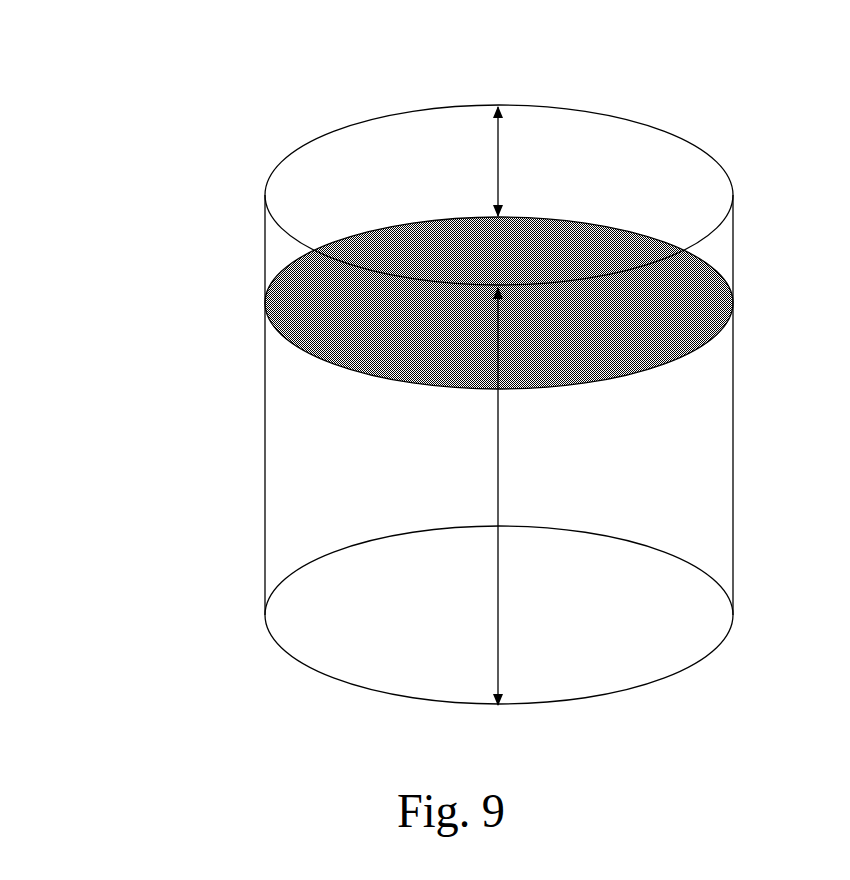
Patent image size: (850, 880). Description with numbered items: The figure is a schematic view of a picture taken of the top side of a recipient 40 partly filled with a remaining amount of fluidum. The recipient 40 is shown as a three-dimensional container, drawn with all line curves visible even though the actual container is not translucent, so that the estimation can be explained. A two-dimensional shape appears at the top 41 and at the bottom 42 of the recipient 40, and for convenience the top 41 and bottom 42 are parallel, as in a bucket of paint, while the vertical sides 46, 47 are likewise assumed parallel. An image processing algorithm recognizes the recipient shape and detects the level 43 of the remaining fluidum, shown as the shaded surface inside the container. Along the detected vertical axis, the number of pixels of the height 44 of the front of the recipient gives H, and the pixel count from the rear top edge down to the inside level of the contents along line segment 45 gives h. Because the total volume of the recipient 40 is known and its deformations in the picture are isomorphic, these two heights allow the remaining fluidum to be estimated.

The recipient 40 is at (439, 362).
The top of the recipient 41 is at (677, 135).
The bottom of the recipient 42 is at (298, 662).
The level of remaining fluidum 43 is at (712, 270).
The height of the front of the recipient 44 is at (498, 482).
The line segment 45 is at (498, 170).
The vertical side 46 is at (733, 505).
The vertical side 47 is at (265, 482).